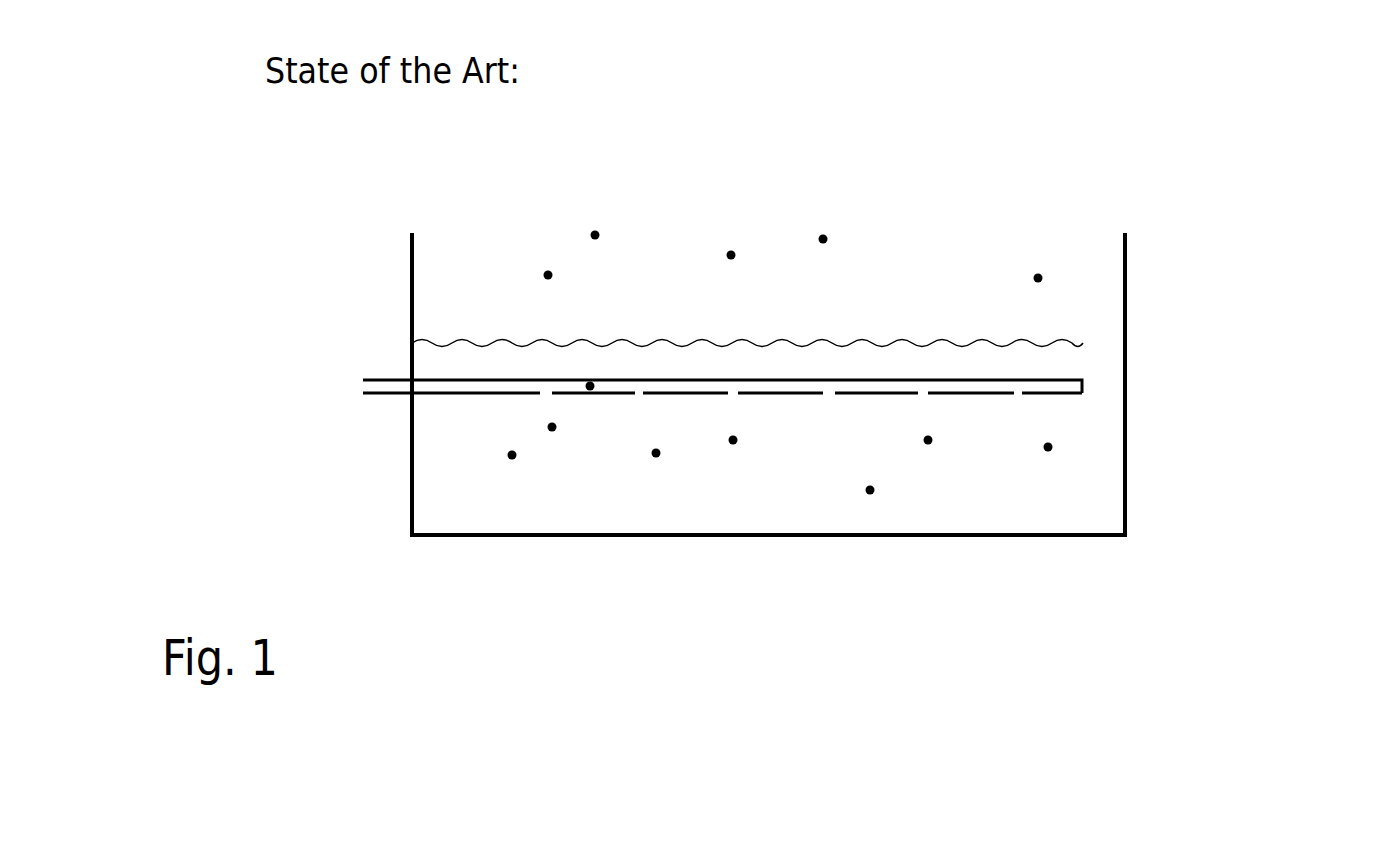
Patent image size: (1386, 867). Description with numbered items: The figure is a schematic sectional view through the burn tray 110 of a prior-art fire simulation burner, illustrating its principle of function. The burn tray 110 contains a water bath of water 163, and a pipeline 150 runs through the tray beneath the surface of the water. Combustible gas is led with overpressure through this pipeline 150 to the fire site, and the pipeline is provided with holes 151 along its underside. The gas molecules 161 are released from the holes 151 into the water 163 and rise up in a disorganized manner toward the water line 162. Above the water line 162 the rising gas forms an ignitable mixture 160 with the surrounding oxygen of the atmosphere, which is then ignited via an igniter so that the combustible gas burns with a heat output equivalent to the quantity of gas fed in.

The burn tray 110 is at (1125, 469).
The pipeline 150 is at (782, 393).
The holes 151 is at (1016, 393).
The ignitable mixture 160 is at (784, 215).
The gas molecules 161 is at (1038, 274).
The water line 162 is at (493, 338).
The water 163 is at (573, 485).